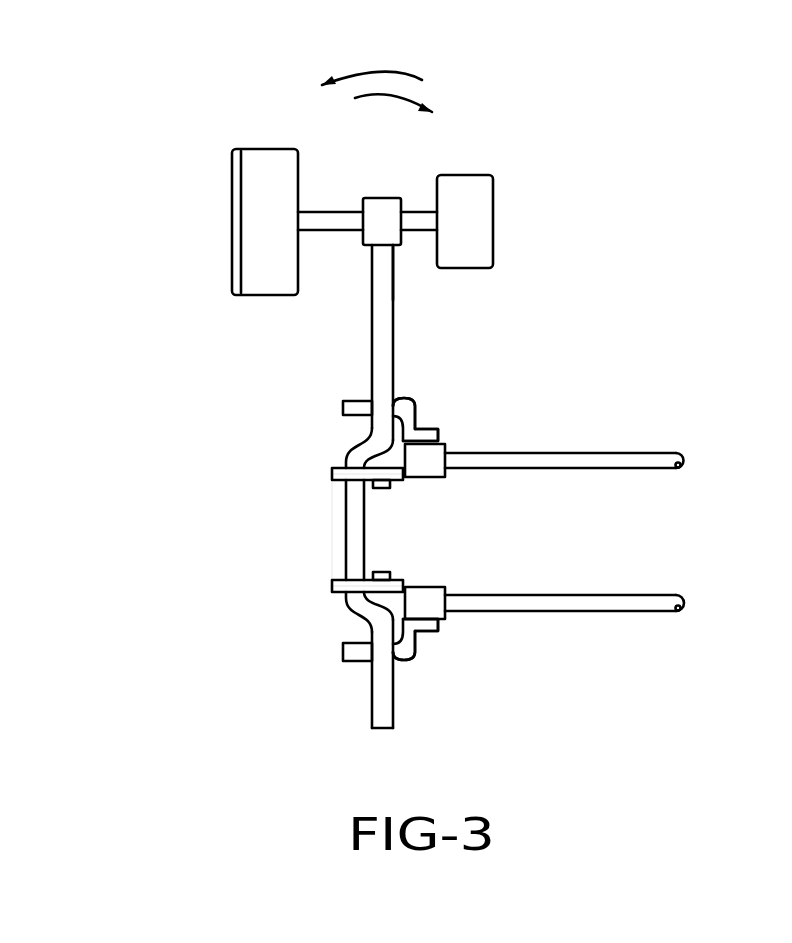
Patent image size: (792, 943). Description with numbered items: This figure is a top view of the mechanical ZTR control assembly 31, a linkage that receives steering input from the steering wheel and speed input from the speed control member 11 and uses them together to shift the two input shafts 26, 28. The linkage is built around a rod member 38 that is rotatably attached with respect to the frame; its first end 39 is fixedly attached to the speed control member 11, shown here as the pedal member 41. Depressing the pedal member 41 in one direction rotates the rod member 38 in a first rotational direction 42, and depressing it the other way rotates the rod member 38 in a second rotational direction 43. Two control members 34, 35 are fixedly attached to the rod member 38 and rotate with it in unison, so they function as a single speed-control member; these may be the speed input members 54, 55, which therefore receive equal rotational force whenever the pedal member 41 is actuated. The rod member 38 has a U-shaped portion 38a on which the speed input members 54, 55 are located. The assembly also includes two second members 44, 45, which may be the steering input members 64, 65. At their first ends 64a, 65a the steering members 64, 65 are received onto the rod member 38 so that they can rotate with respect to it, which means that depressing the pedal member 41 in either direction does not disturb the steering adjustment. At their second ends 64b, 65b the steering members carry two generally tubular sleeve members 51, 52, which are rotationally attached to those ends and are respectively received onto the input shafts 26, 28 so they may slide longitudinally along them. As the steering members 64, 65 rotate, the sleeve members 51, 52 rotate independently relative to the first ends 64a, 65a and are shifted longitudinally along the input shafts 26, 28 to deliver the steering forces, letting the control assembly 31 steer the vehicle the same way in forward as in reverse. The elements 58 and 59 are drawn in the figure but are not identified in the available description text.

The speed control member 11 is at (413, 160).
The input shaft 26 is at (618, 605).
The input shaft 28 is at (643, 462).
The ZTR control assembly 31 is at (198, 380).
The control member 34 is at (273, 588).
The control member 35 is at (332, 477).
The rod member 38 is at (385, 342).
The U-shaped portion 38a is at (352, 528).
The first end 39 is at (407, 267).
The pedal member 41 is at (487, 158).
The first rotational direction 42 is at (380, 71).
The second rotational direction 43 is at (381, 97).
The second member 44 is at (403, 648).
The second member 45 is at (413, 427).
The sleeve member 51 is at (434, 590).
The sleeve member 52 is at (437, 470).
The speed input member 54 is at (353, 597).
The speed input member 55 is at (350, 468).
The lower plate 58 is at (365, 578).
The upper bend 59 is at (360, 497).
The steering input member 64 is at (413, 635).
The first end 64a is at (347, 670).
The second end 64b is at (455, 632).
The steering input member 65 is at (408, 428).
The first end 65a is at (343, 387).
The second end 65b is at (448, 430).